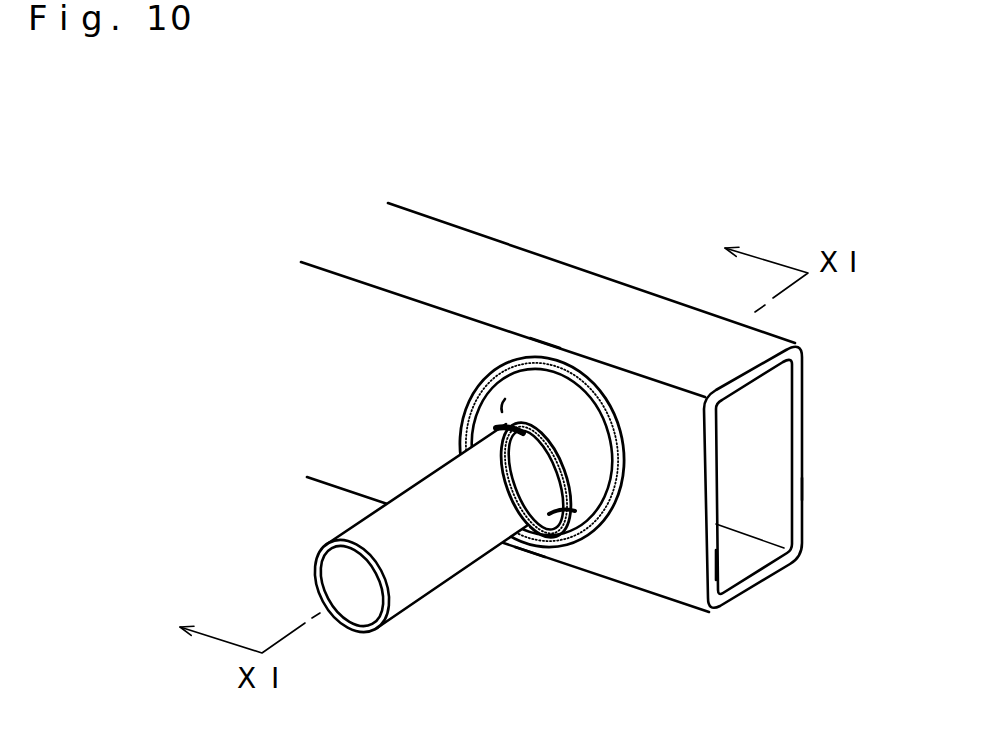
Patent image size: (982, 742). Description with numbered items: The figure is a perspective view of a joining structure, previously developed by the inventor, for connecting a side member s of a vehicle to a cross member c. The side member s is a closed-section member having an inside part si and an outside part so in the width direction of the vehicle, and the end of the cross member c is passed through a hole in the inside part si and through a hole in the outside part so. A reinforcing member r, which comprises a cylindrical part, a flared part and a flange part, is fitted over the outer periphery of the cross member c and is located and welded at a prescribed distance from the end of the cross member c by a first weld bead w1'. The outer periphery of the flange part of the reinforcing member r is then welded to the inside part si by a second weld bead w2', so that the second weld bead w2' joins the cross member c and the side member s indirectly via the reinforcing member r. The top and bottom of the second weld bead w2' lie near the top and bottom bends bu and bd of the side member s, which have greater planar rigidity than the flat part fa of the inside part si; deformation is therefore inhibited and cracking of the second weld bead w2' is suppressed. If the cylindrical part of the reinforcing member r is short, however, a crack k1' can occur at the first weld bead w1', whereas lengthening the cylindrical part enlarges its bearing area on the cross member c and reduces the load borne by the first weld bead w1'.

The side member s is at (464, 252).
The outside part so is at (839, 480).
The inside part si is at (673, 604).
The cross member c is at (336, 520).
The first weld bead w1' is at (581, 479).
The second weld bead w2' is at (564, 451).
The top bend bu is at (559, 323).
The bottom bend bd is at (537, 580).
The reinforcing member r is at (500, 388).
The flat part fa is at (384, 418).
The crack k1' is at (493, 466).